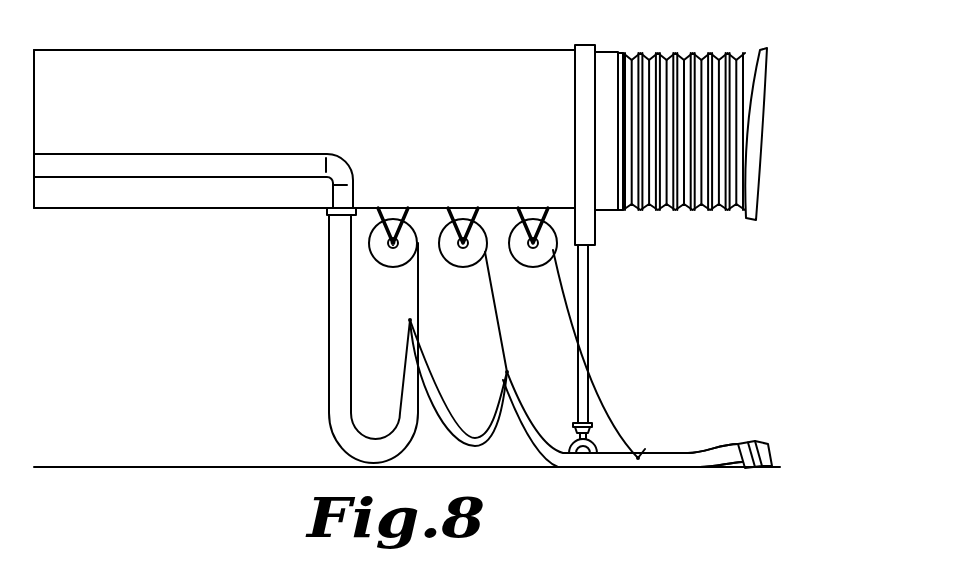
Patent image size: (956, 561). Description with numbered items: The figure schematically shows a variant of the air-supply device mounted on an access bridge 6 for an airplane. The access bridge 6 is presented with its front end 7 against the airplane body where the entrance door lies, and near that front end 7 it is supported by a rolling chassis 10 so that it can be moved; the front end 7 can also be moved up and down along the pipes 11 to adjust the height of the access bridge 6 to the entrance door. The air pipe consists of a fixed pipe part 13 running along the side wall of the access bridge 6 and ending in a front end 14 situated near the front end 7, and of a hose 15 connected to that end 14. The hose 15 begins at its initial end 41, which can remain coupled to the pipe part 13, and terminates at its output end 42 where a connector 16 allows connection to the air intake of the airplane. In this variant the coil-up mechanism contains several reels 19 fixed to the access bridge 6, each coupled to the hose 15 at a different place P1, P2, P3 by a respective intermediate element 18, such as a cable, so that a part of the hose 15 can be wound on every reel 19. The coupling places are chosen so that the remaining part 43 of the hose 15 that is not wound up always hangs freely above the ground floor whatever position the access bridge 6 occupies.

The access bridge 6 is at (538, 67).
The front end 7 is at (747, 112).
The fixed pipe part 13 is at (213, 173).
The front end 14 is at (355, 208).
The initial end 41 is at (342, 223).
The remaining part 43 is at (333, 308).
The hose 15 is at (330, 358).
The reel 19 is at (387, 257).
The intermediate element 18 is at (418, 292).
The pipes 11 is at (589, 328).
The rolling chassis 10 is at (595, 457).
The output end 42 is at (729, 447).
The connector 16 is at (772, 450).
The coupling place P1 is at (412, 320).
The coupling place P2 is at (517, 364).
The coupling place P3 is at (645, 452).